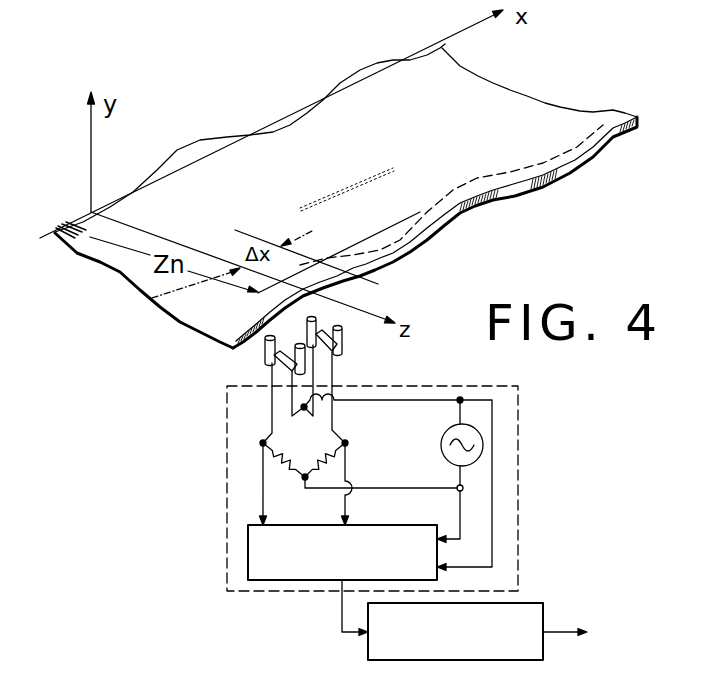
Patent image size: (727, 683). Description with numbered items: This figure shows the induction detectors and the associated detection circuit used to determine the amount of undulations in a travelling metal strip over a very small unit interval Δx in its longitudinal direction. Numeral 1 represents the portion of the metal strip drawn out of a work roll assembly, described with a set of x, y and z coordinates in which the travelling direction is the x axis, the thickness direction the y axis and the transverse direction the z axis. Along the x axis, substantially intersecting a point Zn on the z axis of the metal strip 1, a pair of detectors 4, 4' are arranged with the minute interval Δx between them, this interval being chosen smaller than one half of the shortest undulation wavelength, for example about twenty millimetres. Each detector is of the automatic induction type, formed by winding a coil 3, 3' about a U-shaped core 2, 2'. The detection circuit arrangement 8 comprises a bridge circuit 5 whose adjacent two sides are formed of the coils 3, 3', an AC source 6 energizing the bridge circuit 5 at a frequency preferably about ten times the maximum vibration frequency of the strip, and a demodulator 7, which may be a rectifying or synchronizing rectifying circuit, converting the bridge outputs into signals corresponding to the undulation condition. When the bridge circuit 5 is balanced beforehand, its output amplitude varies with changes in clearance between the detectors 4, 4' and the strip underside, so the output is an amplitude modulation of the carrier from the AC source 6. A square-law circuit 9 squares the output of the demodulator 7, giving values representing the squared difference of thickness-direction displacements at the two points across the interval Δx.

The metal strip 1 is at (559, 109).
The U-shaped core 2 is at (261, 351).
The U-shaped core 2' is at (353, 338).
The coil 3 is at (268, 397).
The coil 3' is at (337, 386).
The detector 4 is at (291, 342).
The detector 4' is at (322, 323).
The bridge circuit 5 is at (311, 450).
The AC source 6 is at (443, 441).
The demodulator 7 is at (411, 537).
The detection circuit arrangement 8 is at (518, 480).
The square-law circuit 9 is at (526, 609).